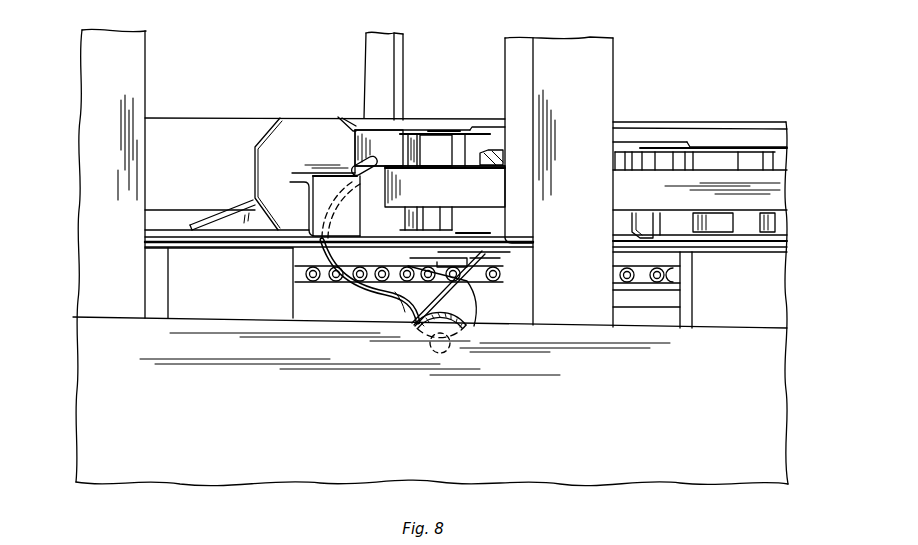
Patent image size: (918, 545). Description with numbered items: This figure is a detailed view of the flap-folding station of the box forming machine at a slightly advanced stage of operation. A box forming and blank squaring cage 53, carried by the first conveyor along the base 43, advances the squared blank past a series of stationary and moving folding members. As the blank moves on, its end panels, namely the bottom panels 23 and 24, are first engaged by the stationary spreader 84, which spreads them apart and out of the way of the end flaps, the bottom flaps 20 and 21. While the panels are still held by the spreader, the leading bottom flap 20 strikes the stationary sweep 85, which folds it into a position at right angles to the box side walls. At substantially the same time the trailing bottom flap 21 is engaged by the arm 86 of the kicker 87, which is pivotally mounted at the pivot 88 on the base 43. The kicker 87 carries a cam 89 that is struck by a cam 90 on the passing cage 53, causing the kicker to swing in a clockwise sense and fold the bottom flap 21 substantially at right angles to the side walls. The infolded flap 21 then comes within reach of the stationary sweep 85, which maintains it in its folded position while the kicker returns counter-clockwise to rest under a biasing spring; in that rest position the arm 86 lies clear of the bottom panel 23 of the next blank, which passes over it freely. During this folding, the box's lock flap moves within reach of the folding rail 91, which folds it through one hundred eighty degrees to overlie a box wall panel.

The bottom flap 20 is at (445, 156).
The bottom flap 21 is at (388, 156).
The bottom panel 23 is at (457, 235).
The bottom panel 24 is at (432, 129).
The base 43 is at (432, 430).
The box forming and blank squaring cage 53 is at (315, 253).
The stationary spreader 84 is at (306, 151).
The stationary sweep 85 is at (440, 193).
The arm 86 is at (368, 288).
The kicker 87 is at (458, 321).
The pivot 88 is at (449, 347).
The cam 89 is at (440, 288).
The cam 90 is at (496, 259).
The folding rail 91 is at (366, 121).